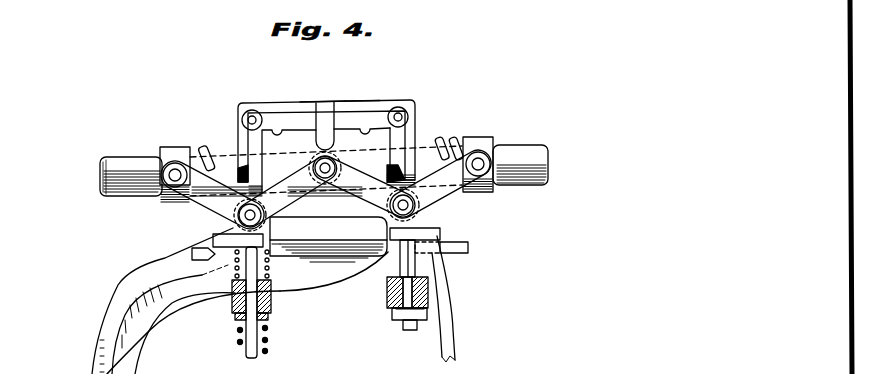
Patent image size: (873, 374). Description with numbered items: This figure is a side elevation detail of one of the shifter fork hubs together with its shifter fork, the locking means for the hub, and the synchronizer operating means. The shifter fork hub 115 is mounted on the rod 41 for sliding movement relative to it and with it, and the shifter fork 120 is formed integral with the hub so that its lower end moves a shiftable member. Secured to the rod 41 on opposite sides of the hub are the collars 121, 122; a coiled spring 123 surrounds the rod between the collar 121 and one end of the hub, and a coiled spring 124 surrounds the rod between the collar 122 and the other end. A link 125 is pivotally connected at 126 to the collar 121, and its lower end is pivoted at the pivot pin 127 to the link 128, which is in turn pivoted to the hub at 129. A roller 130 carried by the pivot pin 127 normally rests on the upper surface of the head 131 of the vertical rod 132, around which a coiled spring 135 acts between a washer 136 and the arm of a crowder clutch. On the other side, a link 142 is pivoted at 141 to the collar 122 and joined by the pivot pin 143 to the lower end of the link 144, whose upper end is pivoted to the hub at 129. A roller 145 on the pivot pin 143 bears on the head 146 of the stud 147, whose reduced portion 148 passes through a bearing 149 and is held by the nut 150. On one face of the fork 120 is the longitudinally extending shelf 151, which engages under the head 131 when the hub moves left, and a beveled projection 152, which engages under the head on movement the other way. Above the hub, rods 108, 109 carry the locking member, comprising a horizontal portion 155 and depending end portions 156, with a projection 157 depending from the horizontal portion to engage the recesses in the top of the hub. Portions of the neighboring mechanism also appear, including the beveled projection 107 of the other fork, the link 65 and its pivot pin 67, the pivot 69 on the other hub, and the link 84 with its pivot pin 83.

The rod 41 is at (546, 151).
The collar 121 is at (176, 147).
The pivot 126 is at (170, 168).
The coiled spring 123 is at (208, 149).
The collar 122 is at (476, 139).
The pivot 141 is at (488, 157).
The coiled spring 124 is at (458, 132).
The rod 109 is at (265, 108).
The depending end portions 156 is at (250, 110).
The rod 108 is at (401, 108).
The shifter fork hub 115 is at (324, 106).
The projection 157 is at (341, 103).
The horizontal portion 155 is at (358, 109).
The link 128 is at (286, 175).
The link 125 is at (192, 208).
The roller 130 is at (220, 231).
The pivot 129 is at (330, 162).
The roller 145 is at (462, 242).
The link 142 is at (450, 197).
The pivot pin 127 is at (262, 237).
The link 144 is at (366, 208).
The shelf 151 is at (298, 250).
The pivot pin 143 is at (384, 263).
The shifter fork 120 is at (142, 318).
The beveled projection 152 is at (166, 258).
The head 131 is at (223, 252).
The rod 132 is at (275, 300).
The washer 136 is at (235, 322).
The coiled spring 135 is at (237, 342).
The head 146 is at (458, 236).
The bearing 149 is at (395, 316).
The nut 150 is at (399, 334).
The stud 147 is at (443, 266).
The reduced portion 148 is at (453, 312).
The beveled projection 107 is at (468, 254).
The link 65 is at (219, 371).
The pivot pin 67 is at (267, 368).
The pivot 69 is at (342, 366).
The link 84 is at (420, 371).
The pivot pin 83 is at (459, 371).